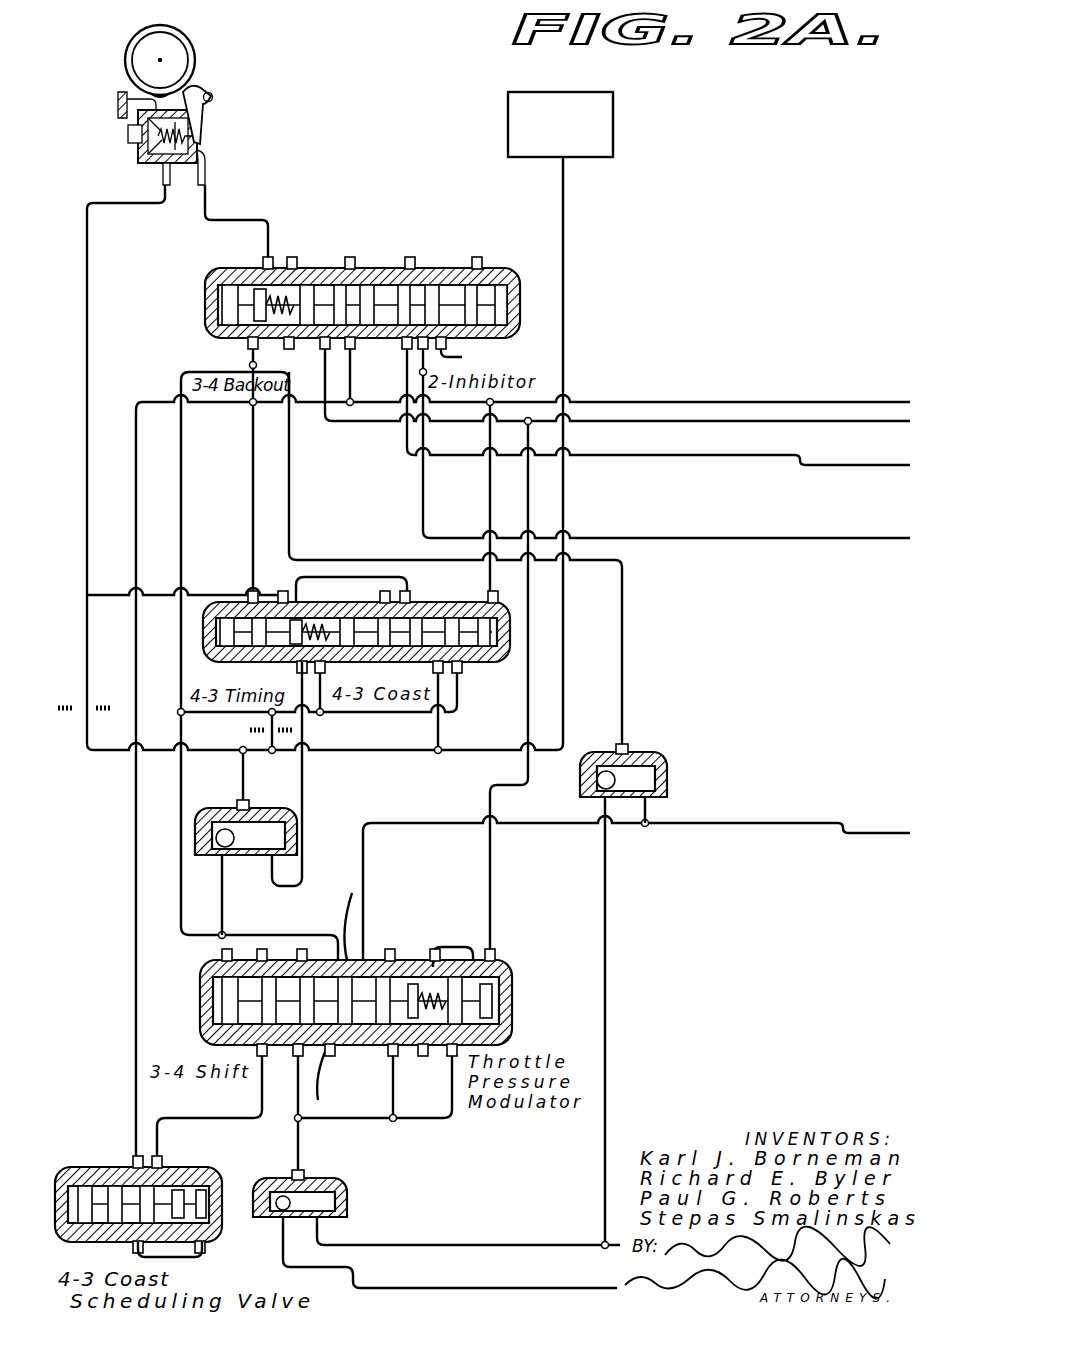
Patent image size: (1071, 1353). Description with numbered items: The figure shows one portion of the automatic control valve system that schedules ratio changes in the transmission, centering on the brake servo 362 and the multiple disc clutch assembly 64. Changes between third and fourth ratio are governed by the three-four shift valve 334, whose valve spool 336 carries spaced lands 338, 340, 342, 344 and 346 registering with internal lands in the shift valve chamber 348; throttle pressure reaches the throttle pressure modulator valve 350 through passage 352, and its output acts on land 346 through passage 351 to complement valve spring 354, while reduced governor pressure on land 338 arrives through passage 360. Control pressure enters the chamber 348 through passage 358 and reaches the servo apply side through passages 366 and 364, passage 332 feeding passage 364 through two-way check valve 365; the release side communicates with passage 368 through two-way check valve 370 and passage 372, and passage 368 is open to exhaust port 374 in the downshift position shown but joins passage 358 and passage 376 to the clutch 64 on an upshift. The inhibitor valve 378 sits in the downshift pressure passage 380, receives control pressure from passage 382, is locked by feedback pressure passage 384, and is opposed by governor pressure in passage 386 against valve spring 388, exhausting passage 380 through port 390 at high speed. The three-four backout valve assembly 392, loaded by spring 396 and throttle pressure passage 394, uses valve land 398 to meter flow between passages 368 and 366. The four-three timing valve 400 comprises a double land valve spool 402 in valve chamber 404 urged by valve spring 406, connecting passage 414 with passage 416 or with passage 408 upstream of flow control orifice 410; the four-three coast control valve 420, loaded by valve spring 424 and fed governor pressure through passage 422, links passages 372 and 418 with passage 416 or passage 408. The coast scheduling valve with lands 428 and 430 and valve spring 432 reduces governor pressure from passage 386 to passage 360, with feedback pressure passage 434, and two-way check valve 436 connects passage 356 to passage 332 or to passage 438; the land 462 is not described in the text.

The multiple disc clutch assembly 64 is at (614, 148).
The brake servo 362 is at (246, 128).
The passage 366 is at (270, 243).
The valve land 398 is at (235, 270).
The 3-4 backout valve assembly 392 is at (268, 292).
The spring 396 is at (325, 295).
The exhaust port 390 is at (385, 285).
The inhibitor valve 378 is at (452, 292).
The valve spring 388 is at (375, 274).
The feedback pressure passage 384 is at (462, 357).
The governor pressure passage 386 is at (252, 430).
The throttle pressure passage 394 is at (860, 385).
The downshift pressure passage 380 is at (466, 458).
The passage 382 is at (410, 472).
The passage 422 is at (484, 516).
The passage 372 is at (80, 660).
The passage 418 is at (108, 592).
The 4-3 timing valve 400 is at (233, 594).
The double land valve spool 402 is at (310, 628).
The valve chamber 404 is at (330, 620).
The valve spring 406 is at (362, 612).
The passage 416 is at (412, 590).
The valve spring 424 is at (356, 599).
The 4-3 coast control valve 420 is at (450, 660).
The passage 408 is at (246, 712).
The flow control orifice 410 is at (290, 725).
The passage 414 is at (244, 775).
The two-way check valve 370 is at (251, 828).
The passage 376 is at (568, 640).
The passage 364 is at (636, 711).
The two-way check valve 365 is at (635, 774).
The passage 358 is at (432, 822).
The passage 368 is at (250, 945).
The valve spool 336 is at (331, 915).
The valve land 338 is at (280, 948).
The valve land 340 is at (312, 960).
The valve land 342 is at (348, 980).
The 3-4 shift valve 334 is at (372, 990).
The valve land 344 is at (390, 990).
The valve land 346 is at (440, 985).
The passage 352 is at (494, 925).
The passage 351 is at (478, 950).
The throttle pressure modulator valve 350 is at (387, 972).
The 3-4 shift valve chamber 348 is at (360, 1075).
The valve spring 354 is at (422, 1048).
The exhaust port 374 is at (330, 1088).
The passage 356 is at (368, 1133).
The governor pressure passage 360 is at (250, 1105).
The valve land 462 is at (176, 1180).
The valve land 430 is at (161, 1200).
The valve spring 432 is at (84, 1240).
The valve land 428 is at (205, 1255).
The feedback pressure passage 434 is at (190, 1262).
The two-way check valve 436 is at (345, 1195).
The passage 332 is at (416, 1245).
The passage 438 is at (470, 1288).